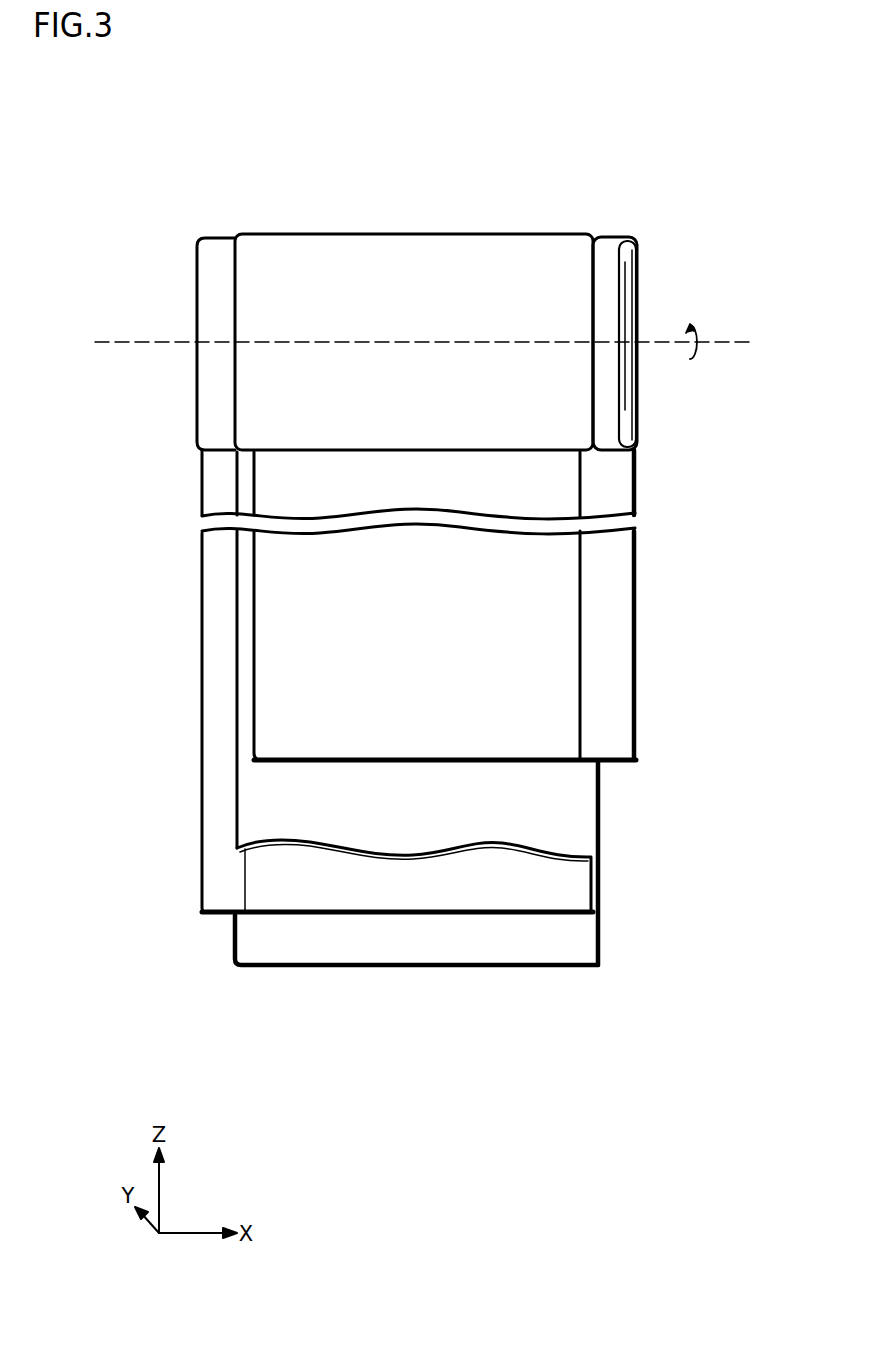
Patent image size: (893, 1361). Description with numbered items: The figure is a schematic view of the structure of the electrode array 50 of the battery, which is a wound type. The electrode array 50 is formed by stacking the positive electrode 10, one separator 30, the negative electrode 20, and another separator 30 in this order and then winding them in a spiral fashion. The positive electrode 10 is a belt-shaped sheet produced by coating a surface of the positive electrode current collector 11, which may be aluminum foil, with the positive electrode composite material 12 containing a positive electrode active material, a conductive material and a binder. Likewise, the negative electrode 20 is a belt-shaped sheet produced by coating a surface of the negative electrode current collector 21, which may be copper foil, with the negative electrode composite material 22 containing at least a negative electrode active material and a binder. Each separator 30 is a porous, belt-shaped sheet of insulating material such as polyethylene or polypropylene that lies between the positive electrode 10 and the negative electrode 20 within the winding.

The electrode array 50 is at (177, 185).
The positive electrode 10 is at (520, 605).
The positive electrode current collector 11 is at (617, 633).
The positive electrode composite material 12 is at (570, 583).
The negative electrode 20 is at (313, 681).
The negative electrode current collector 21 is at (203, 815).
The negative electrode composite material 22 is at (287, 892).
The separator 30 is at (598, 820).